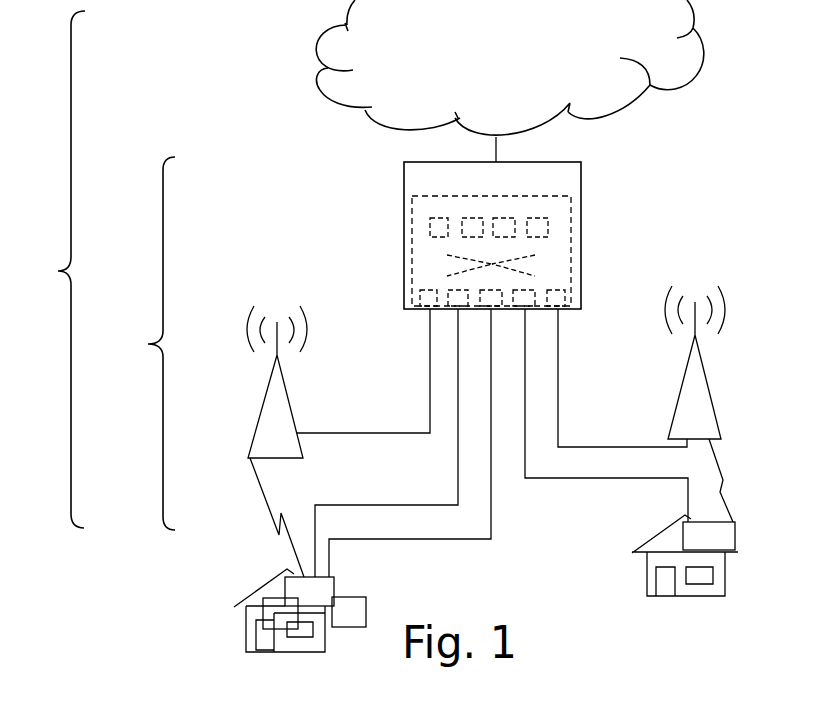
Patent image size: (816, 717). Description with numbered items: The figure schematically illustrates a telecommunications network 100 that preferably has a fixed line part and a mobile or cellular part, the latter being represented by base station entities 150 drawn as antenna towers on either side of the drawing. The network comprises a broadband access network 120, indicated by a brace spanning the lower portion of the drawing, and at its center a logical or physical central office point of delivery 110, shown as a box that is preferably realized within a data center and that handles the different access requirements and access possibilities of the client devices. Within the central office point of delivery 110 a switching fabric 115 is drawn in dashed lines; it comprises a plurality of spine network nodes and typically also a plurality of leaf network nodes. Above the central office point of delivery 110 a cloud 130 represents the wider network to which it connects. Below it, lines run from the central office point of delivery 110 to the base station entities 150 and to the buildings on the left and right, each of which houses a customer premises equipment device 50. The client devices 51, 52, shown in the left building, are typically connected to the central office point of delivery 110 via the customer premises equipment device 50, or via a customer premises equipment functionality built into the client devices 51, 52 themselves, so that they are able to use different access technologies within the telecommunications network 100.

The telecommunications network 100 is at (56, 269).
The central office point of delivery 110 is at (492, 235).
The switching fabric 115 is at (491, 251).
The broadband access network 120 is at (137, 343).
The network cloud 130 is at (510, 81).
The base station entity 150 is at (486, 373).
The customer premises equipment device 50 is at (510, 564).
The client device 51 is at (349, 612).
The client device 52 is at (280, 613).